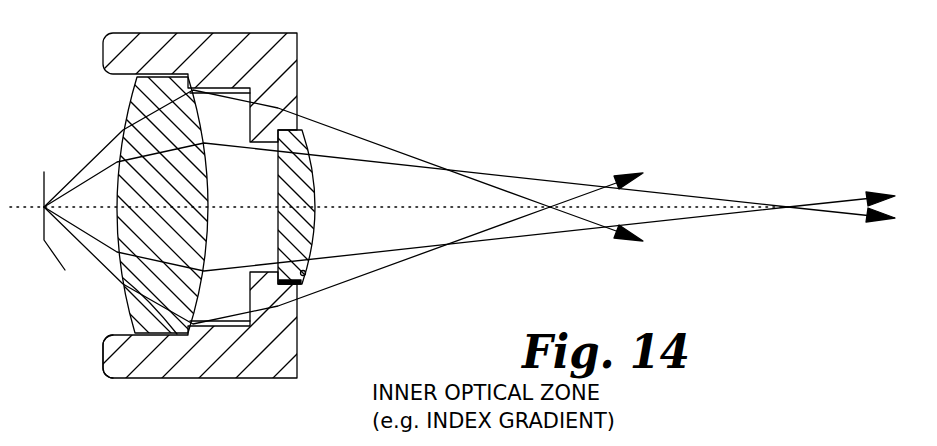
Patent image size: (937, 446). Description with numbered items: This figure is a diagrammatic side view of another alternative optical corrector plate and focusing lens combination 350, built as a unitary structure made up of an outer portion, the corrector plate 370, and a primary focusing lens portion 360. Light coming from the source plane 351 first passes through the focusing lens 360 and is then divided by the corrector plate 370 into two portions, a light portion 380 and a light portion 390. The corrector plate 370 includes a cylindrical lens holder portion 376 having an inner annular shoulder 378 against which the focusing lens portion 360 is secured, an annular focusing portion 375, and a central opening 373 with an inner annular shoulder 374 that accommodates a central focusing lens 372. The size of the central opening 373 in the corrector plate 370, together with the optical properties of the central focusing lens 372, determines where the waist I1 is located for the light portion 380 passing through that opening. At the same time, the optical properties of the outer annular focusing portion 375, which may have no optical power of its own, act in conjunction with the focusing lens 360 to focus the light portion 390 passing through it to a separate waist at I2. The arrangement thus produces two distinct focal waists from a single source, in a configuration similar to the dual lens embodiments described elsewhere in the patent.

The optical corrector plate and focusing lens combination 350 is at (345, 47).
The source plane 351 is at (65, 270).
The primary focusing lens portion 360 is at (127, 117).
The corrector plate 370 is at (310, 332).
The central focusing lens 372 is at (303, 197).
The central opening 373 is at (305, 273).
The inner annular shoulder 374 is at (287, 274).
The annular focusing portion 375 is at (282, 363).
The cylindrical lens holder portion 376 is at (117, 357).
The inner annular shoulder 378 is at (177, 334).
The light portion 380 is at (686, 196).
The light portion 390 is at (407, 258).
The waist I1 is at (793, 203).
The waist I2 is at (548, 207).